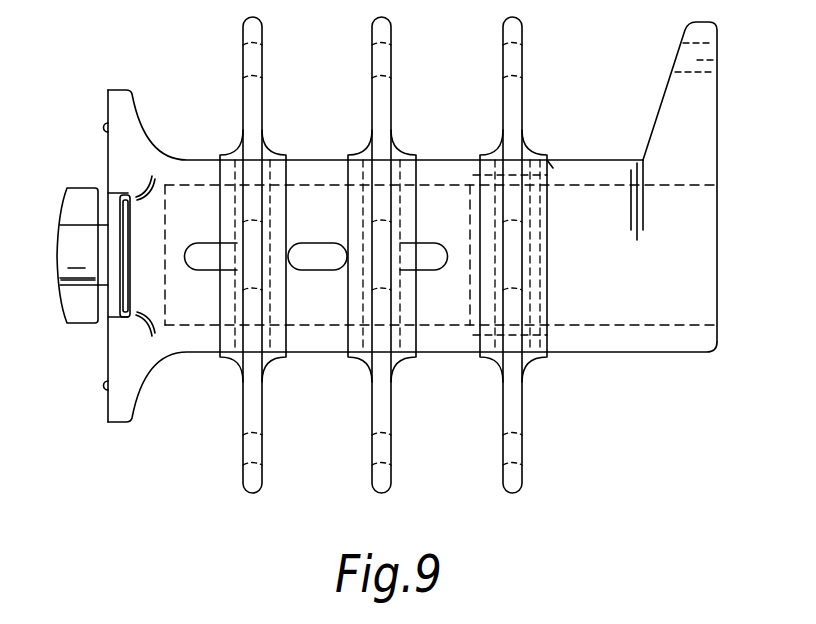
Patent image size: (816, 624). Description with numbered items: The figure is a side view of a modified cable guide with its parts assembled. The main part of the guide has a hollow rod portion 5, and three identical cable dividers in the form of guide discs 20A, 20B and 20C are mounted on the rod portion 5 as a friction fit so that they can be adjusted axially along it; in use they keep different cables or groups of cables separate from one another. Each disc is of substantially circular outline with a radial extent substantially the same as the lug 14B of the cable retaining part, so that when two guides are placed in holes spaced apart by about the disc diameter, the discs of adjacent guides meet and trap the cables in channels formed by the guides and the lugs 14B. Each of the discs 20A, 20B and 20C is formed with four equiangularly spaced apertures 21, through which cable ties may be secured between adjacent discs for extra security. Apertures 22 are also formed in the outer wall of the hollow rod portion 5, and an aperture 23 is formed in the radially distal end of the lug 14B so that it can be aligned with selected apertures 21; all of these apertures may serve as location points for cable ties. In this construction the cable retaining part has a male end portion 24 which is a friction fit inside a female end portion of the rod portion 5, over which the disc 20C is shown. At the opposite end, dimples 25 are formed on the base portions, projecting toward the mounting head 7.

The rod portion 5 is at (313, 176).
The mounting head 7 is at (75, 250).
The lug 14B is at (690, 110).
The guide disc 20A is at (243, 398).
The guide disc 20B is at (372, 408).
The guide disc 20C is at (503, 408).
The apertures 21 is at (522, 61).
The apertures 22 is at (433, 268).
The aperture 23 is at (716, 60).
The male end portion 24 is at (470, 300).
The dimples 25 is at (104, 128).